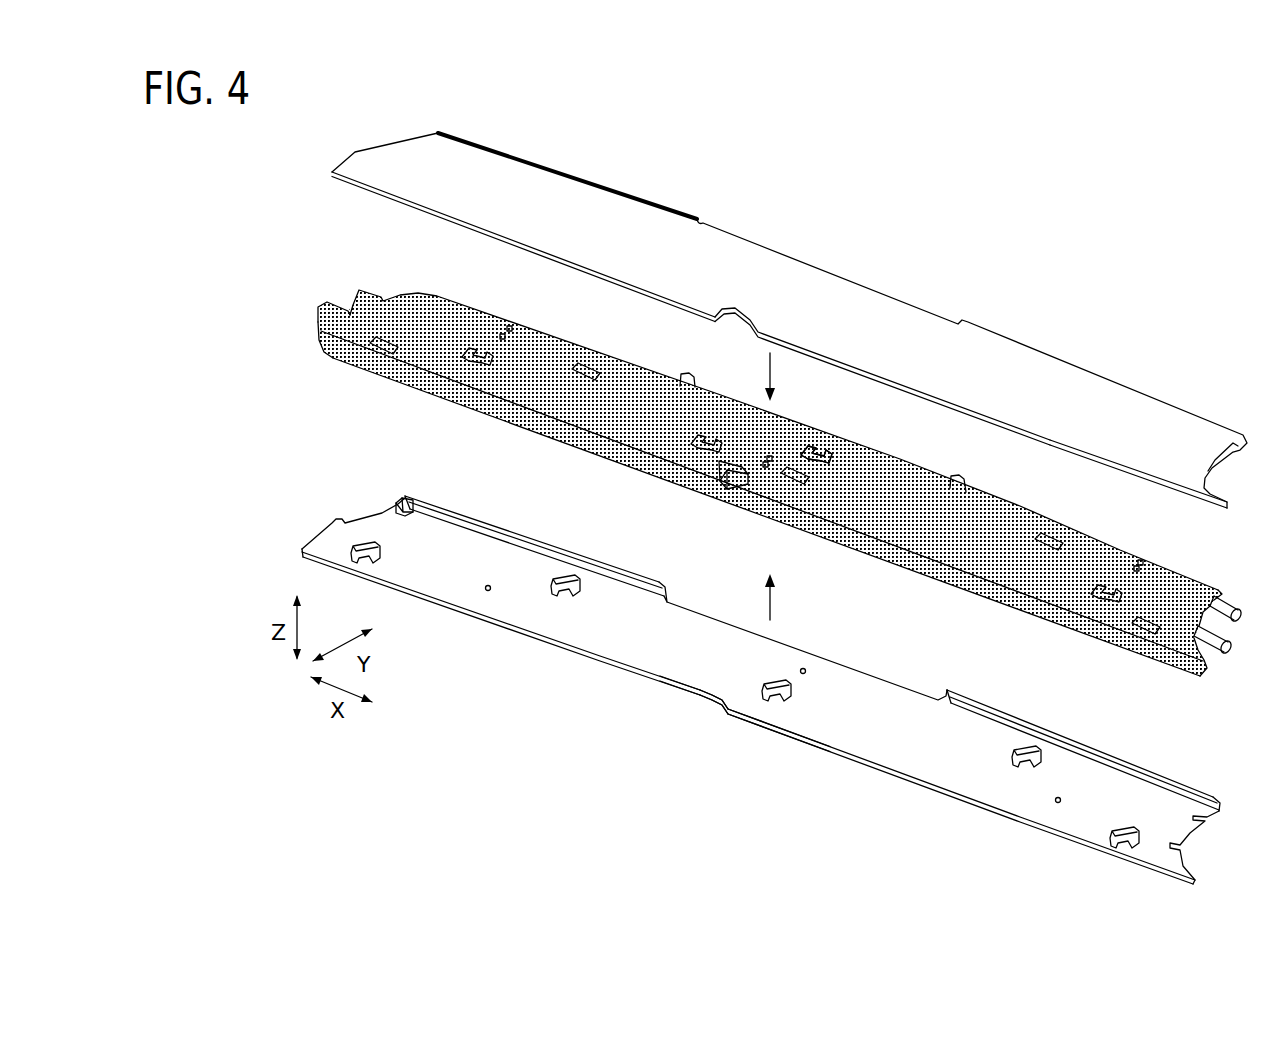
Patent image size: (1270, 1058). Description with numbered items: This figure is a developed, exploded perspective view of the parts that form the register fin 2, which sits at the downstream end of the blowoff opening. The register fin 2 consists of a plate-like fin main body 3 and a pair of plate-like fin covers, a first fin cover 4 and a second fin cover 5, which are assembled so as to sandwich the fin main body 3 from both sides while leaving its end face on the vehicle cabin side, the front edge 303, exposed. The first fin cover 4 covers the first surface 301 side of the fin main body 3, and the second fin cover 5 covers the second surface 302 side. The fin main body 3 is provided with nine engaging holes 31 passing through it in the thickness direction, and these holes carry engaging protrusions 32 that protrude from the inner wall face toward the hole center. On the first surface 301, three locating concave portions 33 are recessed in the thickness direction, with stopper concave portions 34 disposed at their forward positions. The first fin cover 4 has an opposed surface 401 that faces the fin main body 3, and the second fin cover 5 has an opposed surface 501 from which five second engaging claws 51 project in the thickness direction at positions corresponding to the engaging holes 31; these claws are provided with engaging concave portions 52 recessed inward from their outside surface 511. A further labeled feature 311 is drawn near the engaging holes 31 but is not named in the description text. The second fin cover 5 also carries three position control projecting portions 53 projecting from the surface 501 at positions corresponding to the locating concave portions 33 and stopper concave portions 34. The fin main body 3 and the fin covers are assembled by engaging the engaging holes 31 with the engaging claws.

The register fin 2 is at (1016, 290).
The fin main body 3 is at (316, 297).
The first surface 301 is at (427, 310).
The second surface 302 is at (1098, 643).
The front edge 303 is at (403, 368).
The engaging holes 31 is at (593, 366).
The engaging hole 311 is at (813, 447).
The engaging protrusions 32 is at (819, 445).
The locating concave portions 33 is at (510, 327).
The stopper concave portions 34 is at (503, 333).
The first fin cover 4 is at (390, 132).
The opposed surface 401 is at (1124, 477).
The second fin cover 5 is at (311, 524).
The opposed surface 501 is at (414, 543).
The second engaging claws 51 is at (728, 700).
The outside surface 511 is at (727, 700).
The engaging concave portions 52 is at (772, 702).
The position control projecting portions 53 is at (488, 592).